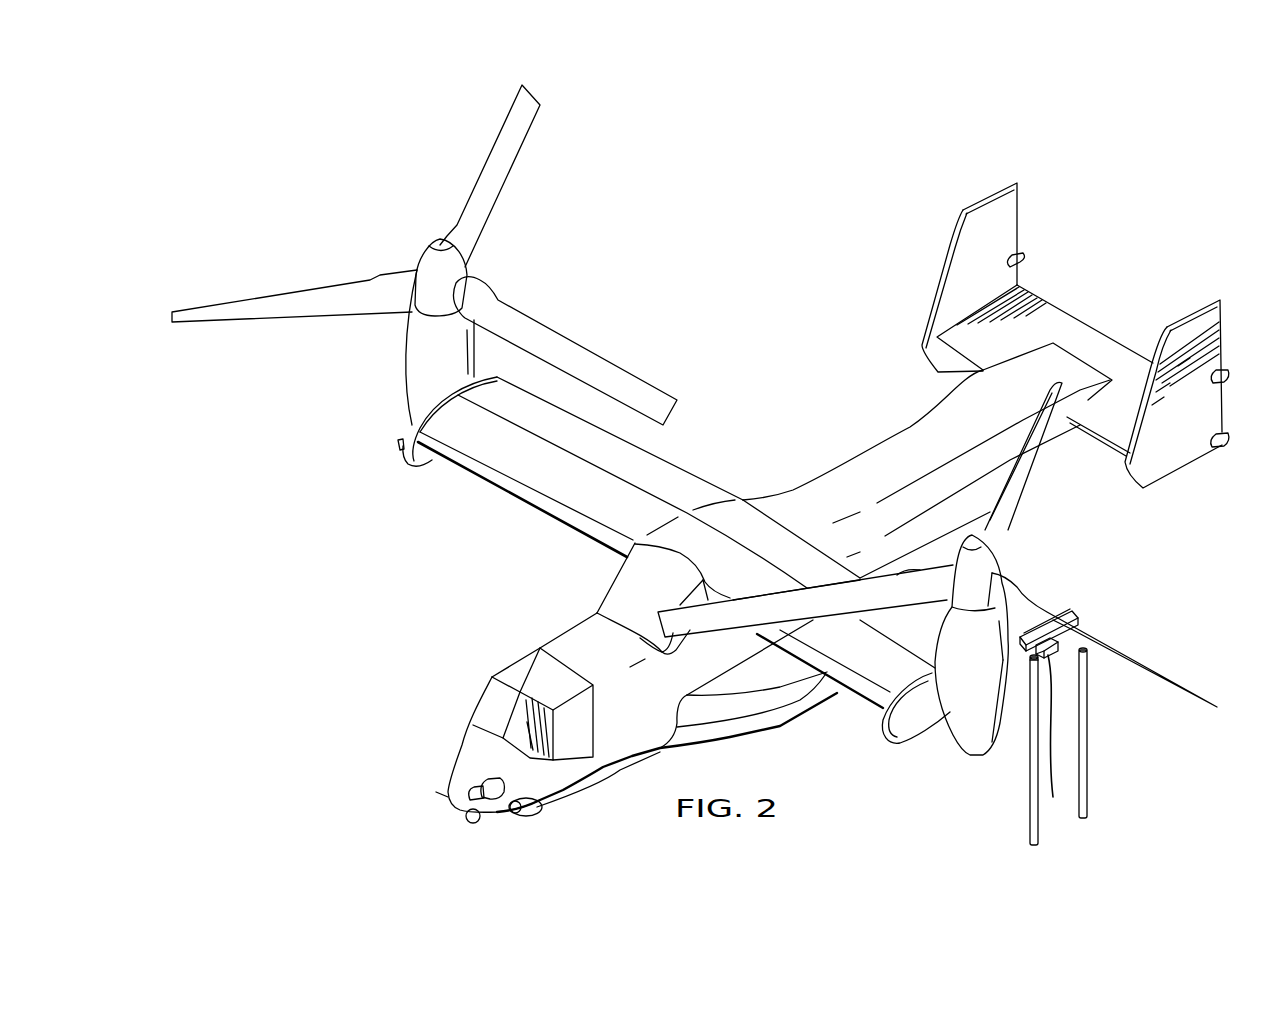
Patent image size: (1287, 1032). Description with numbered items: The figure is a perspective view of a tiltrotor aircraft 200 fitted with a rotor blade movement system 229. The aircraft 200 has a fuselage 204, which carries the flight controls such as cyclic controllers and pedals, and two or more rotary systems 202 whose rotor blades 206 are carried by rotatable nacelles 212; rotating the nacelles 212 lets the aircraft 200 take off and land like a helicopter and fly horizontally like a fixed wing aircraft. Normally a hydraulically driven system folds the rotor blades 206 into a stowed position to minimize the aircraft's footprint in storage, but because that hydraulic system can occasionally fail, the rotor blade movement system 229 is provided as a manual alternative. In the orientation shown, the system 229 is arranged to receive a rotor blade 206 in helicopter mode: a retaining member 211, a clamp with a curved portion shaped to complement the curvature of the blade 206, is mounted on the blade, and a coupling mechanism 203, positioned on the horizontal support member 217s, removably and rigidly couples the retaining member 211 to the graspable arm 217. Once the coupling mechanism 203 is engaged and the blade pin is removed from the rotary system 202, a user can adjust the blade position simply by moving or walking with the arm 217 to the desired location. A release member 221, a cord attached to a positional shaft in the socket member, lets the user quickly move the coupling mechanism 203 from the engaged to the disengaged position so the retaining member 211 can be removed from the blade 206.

The tiltrotor aircraft 200 is at (1127, 160).
The rotary system 202 is at (1006, 560).
The coupling mechanism 203 is at (1065, 651).
The fuselage 204 is at (553, 637).
The rotor blade 206 is at (1185, 684).
The retaining member 211 is at (1040, 612).
The rotatable nacelle 212 is at (950, 730).
The graspable arm 217 is at (1086, 780).
The horizontal support member 217s is at (1055, 676).
The release member 221 is at (1055, 730).
The rotor blade movement system 229 is at (1016, 663).